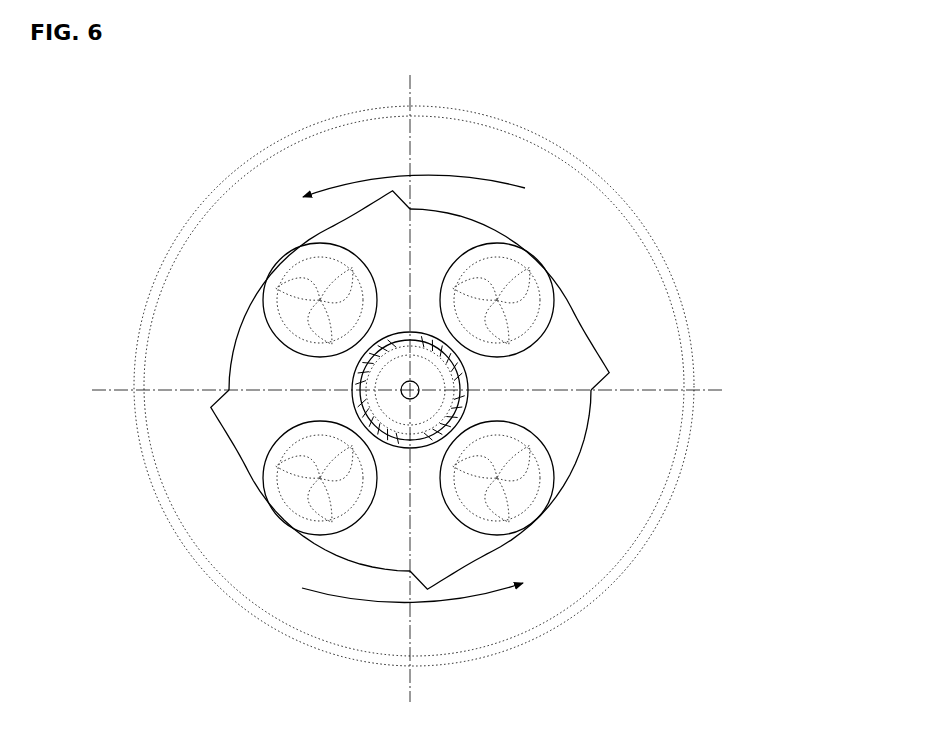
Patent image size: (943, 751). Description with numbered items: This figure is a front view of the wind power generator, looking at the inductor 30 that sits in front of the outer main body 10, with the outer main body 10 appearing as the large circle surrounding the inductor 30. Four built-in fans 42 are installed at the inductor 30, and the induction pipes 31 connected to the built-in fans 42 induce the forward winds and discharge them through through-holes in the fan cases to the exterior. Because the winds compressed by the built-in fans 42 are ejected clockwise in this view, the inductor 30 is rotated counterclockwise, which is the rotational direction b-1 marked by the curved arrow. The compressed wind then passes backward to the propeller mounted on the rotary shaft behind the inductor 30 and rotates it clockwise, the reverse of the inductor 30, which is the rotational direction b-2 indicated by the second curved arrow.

The outer main body 10 is at (667, 505).
The inductor 30 is at (326, 390).
The induction pipes 31 is at (215, 432).
The built-in fans 42 is at (535, 525).
The rotational direction of the inductor b-1 is at (522, 188).
The rotational direction of the propeller b-2 is at (525, 370).